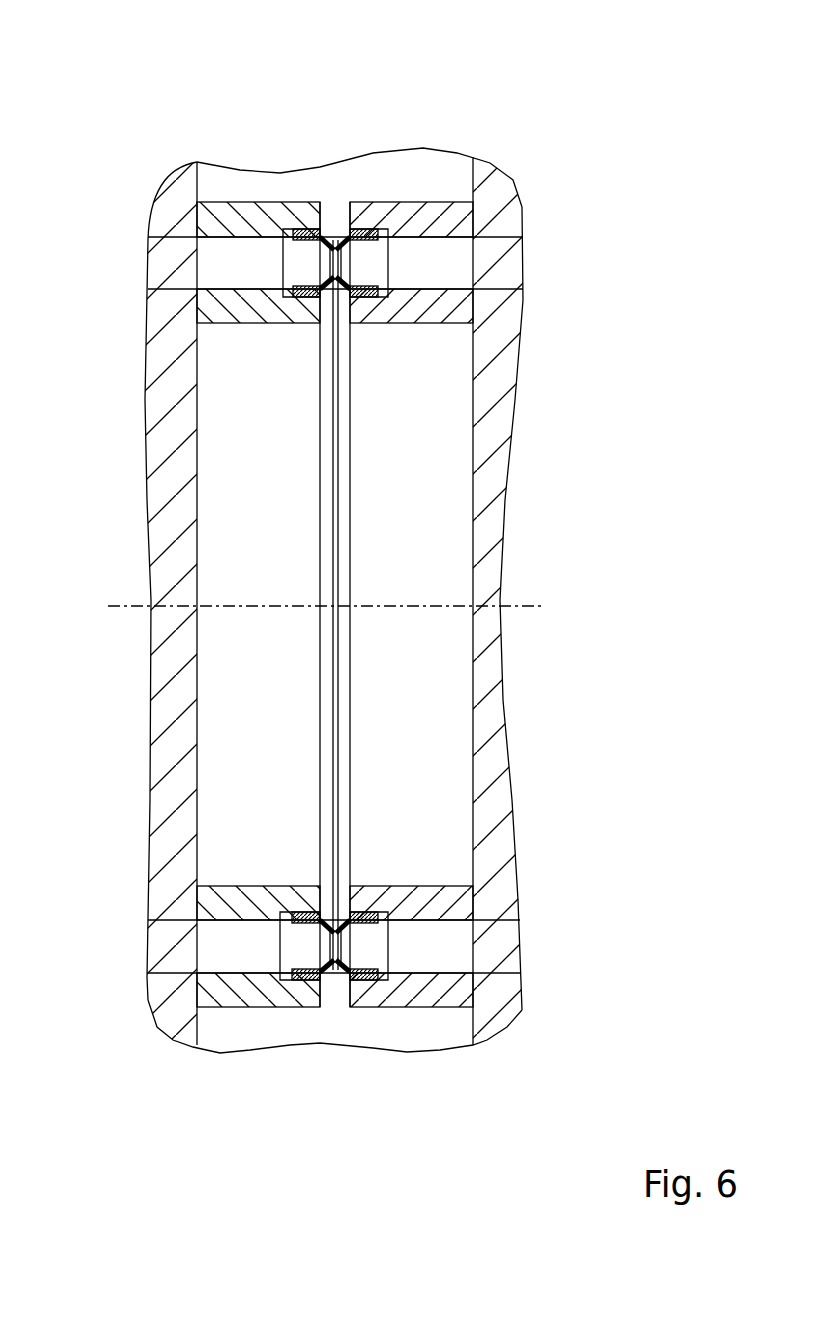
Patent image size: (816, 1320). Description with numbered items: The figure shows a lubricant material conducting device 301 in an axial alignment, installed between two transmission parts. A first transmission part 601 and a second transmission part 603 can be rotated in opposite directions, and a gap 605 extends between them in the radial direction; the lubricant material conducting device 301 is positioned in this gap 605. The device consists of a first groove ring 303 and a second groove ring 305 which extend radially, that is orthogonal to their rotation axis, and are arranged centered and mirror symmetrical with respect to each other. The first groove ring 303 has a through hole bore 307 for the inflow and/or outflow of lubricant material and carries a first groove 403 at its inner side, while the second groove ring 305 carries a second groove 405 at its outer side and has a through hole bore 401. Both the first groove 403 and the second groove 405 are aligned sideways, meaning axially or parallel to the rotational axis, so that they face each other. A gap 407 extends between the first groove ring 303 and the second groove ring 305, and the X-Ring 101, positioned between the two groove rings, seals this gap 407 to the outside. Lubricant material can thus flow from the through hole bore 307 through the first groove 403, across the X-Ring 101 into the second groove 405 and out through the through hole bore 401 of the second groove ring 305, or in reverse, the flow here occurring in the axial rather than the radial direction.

The X-Ring 101 is at (333, 993).
The lubricant material conducting device 301 is at (400, 1027).
The first groove ring 303 is at (258, 222).
The second groove ring 305 is at (447, 268).
The through hole bore 307 is at (243, 268).
The through hole bore 401 is at (485, 205).
The first groove 403 is at (285, 226).
The second groove 405 is at (377, 228).
The gap 407 is at (335, 217).
The first transmission part 601 is at (180, 220).
The second transmission part 603 is at (512, 222).
The gap 605 is at (251, 985).